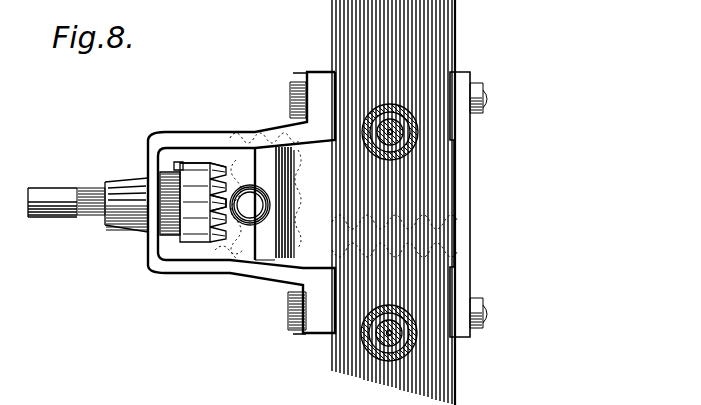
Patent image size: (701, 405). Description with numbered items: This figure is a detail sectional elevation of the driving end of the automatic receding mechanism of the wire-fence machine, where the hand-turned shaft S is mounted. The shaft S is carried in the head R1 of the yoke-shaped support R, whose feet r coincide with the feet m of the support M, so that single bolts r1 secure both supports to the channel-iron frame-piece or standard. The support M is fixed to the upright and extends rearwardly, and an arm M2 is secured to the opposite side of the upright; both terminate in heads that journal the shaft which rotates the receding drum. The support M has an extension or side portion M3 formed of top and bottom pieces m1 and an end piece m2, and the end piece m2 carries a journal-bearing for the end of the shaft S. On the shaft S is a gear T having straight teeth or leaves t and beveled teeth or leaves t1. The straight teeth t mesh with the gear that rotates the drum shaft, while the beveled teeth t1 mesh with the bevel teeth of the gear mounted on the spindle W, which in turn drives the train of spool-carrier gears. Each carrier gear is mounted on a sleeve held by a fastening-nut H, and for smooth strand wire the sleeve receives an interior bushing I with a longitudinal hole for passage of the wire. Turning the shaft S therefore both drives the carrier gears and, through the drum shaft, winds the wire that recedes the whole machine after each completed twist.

The fastening-nut H is at (395, 202).
The arm M2 is at (472, 202).
The interior bushing I is at (406, 113).
The support or arm M is at (298, 168).
The feet m is at (317, 202).
The top and bottom pieces m1 is at (283, 266).
The end piece m2 is at (239, 163).
The bolts r1 is at (287, 318).
The feet r is at (306, 333).
The spindle W is at (250, 205).
The shaft S is at (48, 194).
The head R1 is at (127, 222).
The gear T is at (182, 299).
The straight teeth or leaves t is at (189, 170).
The beveled teeth or leaves t1 is at (218, 160).
The support R is at (220, 262).
The extension or side portion M3 is at (222, 238).